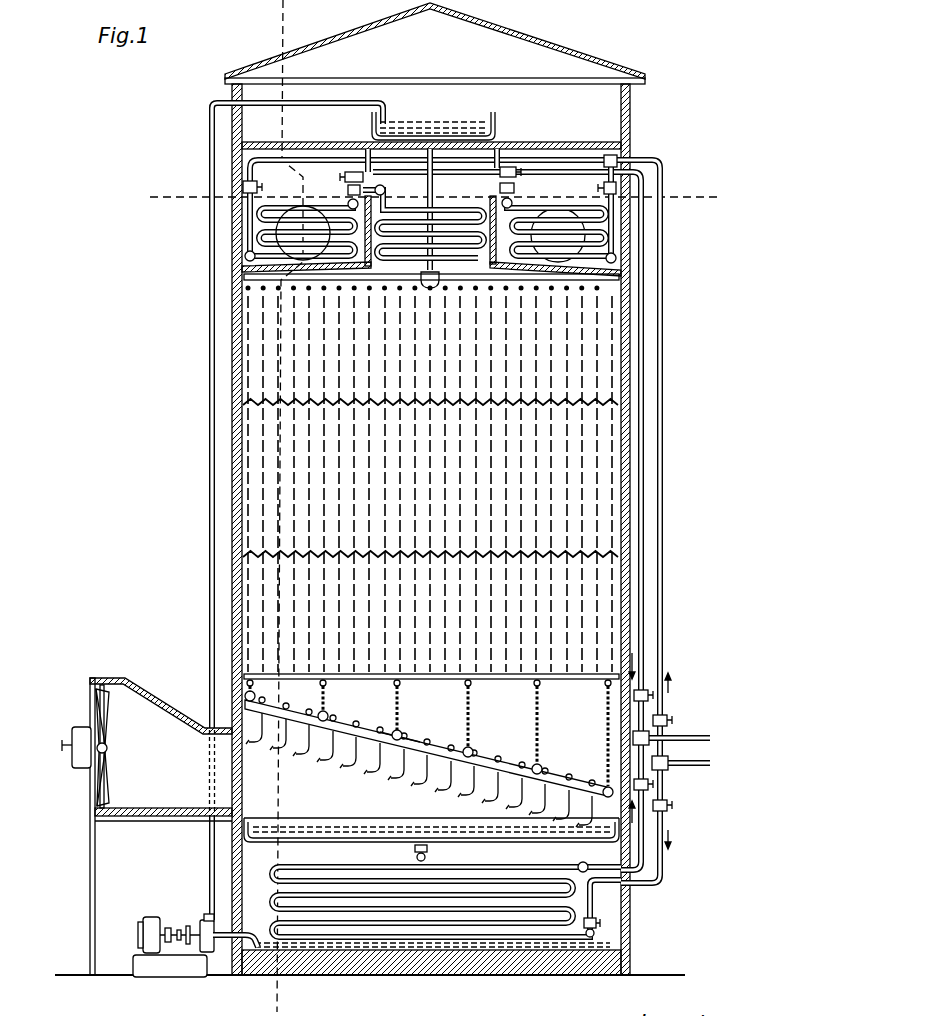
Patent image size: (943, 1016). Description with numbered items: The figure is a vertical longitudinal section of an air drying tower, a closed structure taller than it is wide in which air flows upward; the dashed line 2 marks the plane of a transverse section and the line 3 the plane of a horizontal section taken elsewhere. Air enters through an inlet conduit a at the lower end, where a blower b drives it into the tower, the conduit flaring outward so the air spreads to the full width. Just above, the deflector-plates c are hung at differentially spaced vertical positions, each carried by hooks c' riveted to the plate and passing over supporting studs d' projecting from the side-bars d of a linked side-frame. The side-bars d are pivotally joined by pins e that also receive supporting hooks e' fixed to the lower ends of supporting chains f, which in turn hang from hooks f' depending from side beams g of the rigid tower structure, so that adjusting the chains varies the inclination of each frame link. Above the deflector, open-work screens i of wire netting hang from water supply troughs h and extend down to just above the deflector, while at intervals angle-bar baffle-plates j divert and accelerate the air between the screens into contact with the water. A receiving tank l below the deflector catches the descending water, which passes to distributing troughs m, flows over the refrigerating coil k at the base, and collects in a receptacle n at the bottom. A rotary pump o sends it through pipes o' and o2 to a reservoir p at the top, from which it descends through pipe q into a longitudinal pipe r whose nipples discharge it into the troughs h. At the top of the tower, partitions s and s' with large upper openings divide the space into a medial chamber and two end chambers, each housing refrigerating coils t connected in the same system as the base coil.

The section line 2— 2 is at (250, 33).
The section line 3— 3 is at (188, 182).
The air inlet conduit a is at (161, 826).
The blower b is at (85, 746).
The deflector-plates c is at (419, 762).
The hooks c' is at (439, 719).
The side-bars d is at (429, 742).
The supporting studs d' is at (406, 719).
The pins e is at (396, 737).
The supporting hooks e' is at (519, 727).
The supporting chains f is at (574, 733).
The hooks f' is at (589, 696).
The side beams g is at (246, 676).
The water supply pipes or troughs h is at (244, 286).
The open-work screens i is at (430, 484).
The baffle-plates j is at (264, 407).
The refrigerating coil k is at (438, 899).
The receiving tank l is at (291, 822).
The distributing pipes or troughs m is at (288, 870).
The receptacle n is at (432, 951).
The rotary pump o is at (178, 945).
The pipe o' is at (238, 926).
The pipe o2 is at (210, 879).
The reservoir p is at (495, 122).
The pipe q is at (435, 200).
The longitudinal pipe r is at (440, 280).
The partition s is at (303, 216).
The partition s' is at (557, 209).
The refrigerating coils t is at (301, 207).